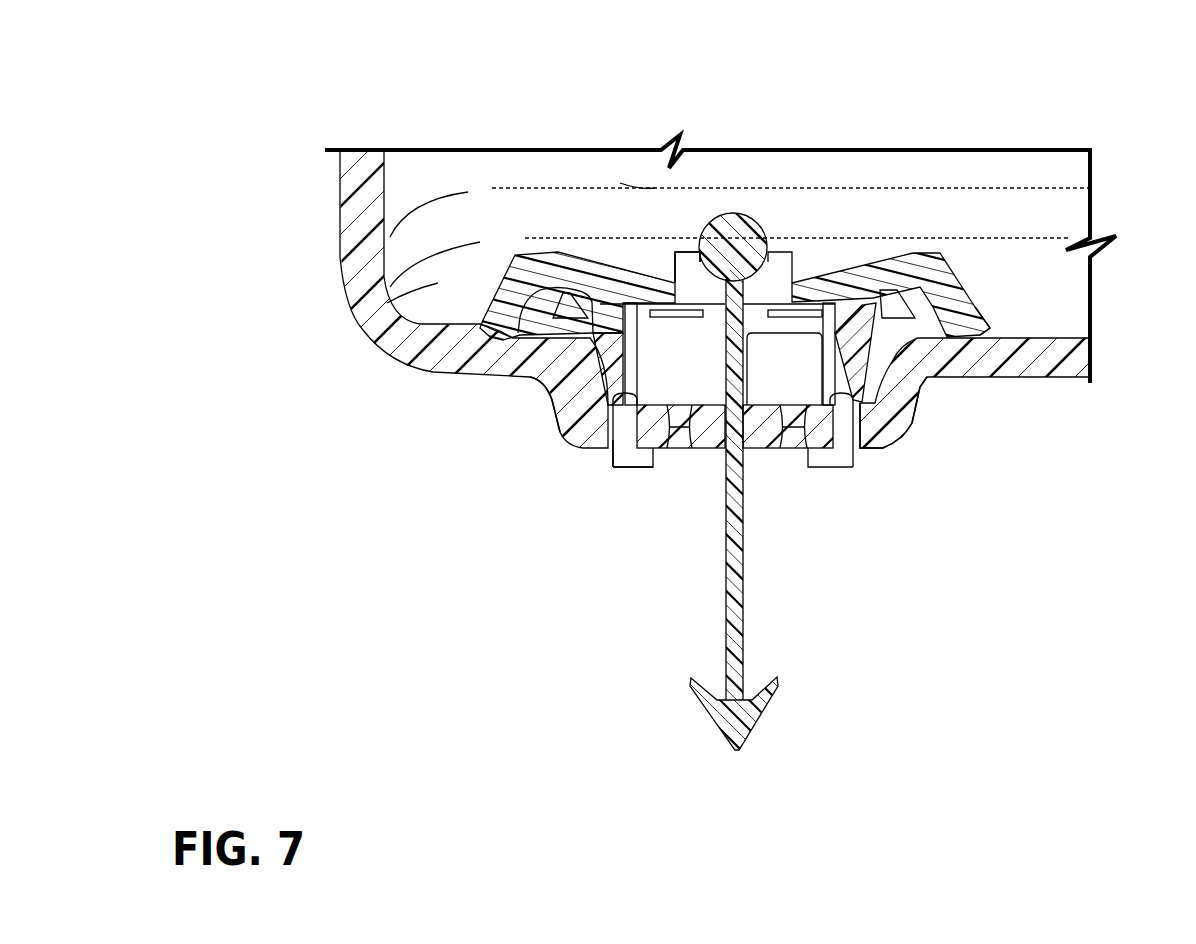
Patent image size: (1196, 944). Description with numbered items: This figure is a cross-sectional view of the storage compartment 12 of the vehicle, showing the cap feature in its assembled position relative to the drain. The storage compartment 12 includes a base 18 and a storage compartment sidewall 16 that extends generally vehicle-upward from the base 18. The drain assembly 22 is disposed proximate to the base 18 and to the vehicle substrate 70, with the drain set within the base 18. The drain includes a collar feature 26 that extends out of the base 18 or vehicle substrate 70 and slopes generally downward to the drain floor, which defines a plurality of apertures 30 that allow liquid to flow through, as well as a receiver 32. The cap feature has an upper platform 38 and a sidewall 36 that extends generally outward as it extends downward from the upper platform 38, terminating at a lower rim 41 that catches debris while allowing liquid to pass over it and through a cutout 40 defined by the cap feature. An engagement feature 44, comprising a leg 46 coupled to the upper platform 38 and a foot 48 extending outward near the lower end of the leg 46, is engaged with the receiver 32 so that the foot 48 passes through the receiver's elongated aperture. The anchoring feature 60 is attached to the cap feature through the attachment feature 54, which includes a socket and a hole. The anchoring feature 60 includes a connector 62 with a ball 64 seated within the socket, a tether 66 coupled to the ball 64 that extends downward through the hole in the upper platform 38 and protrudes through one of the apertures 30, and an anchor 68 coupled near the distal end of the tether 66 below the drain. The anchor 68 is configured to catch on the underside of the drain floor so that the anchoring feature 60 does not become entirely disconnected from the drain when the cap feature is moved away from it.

The storage compartment 12 is at (1022, 180).
The storage compartment sidewall 16 is at (438, 287).
The base 18 is at (410, 372).
The drain assembly 22 is at (911, 210).
The collar feature 26 is at (543, 380).
The apertures 30 is at (683, 452).
The receiver 32 is at (861, 453).
The sidewall 36 is at (503, 285).
The upper platform 38 is at (541, 253).
The cutout 40 is at (900, 322).
The lower rim 41 is at (482, 328).
The engagement feature 44 is at (605, 424).
The leg 46 is at (611, 456).
The foot 48 is at (643, 470).
The attachment feature 54 is at (688, 266).
The anchoring feature 60 is at (746, 621).
The connector 62 is at (765, 215).
The ball 64 is at (733, 215).
The tether 66 is at (735, 578).
The anchor 68 is at (755, 718).
The vehicle substrate 70 is at (918, 431).